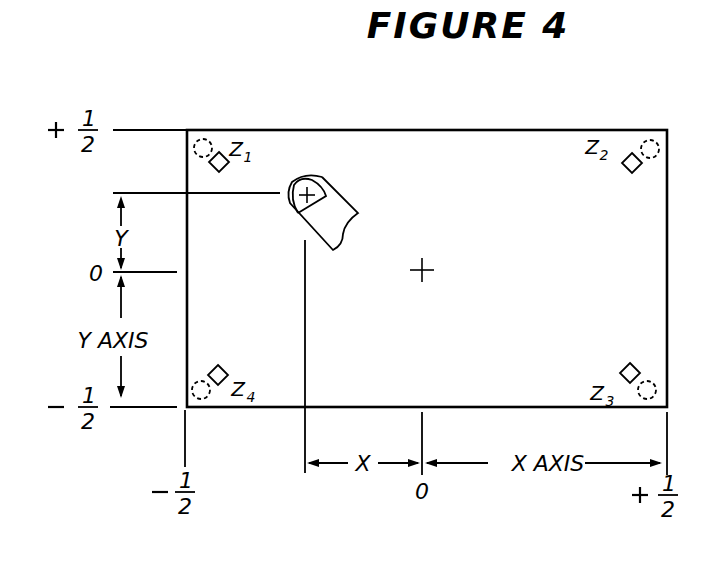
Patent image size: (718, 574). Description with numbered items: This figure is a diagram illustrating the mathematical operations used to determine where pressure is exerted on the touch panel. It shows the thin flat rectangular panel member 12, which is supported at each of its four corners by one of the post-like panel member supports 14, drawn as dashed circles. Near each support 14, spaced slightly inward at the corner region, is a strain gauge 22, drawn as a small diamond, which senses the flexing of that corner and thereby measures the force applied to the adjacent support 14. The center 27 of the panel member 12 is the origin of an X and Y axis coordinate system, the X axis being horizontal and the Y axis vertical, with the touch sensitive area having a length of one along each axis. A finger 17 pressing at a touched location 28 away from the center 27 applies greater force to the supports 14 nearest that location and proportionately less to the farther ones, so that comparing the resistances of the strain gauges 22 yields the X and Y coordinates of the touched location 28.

The panel member 12 is at (479, 351).
The panel member supports 14 is at (209, 140).
The strain gauges 22 is at (229, 163).
The finger 17 is at (337, 208).
The center 27 is at (427, 263).
The touched location 28 is at (310, 192).